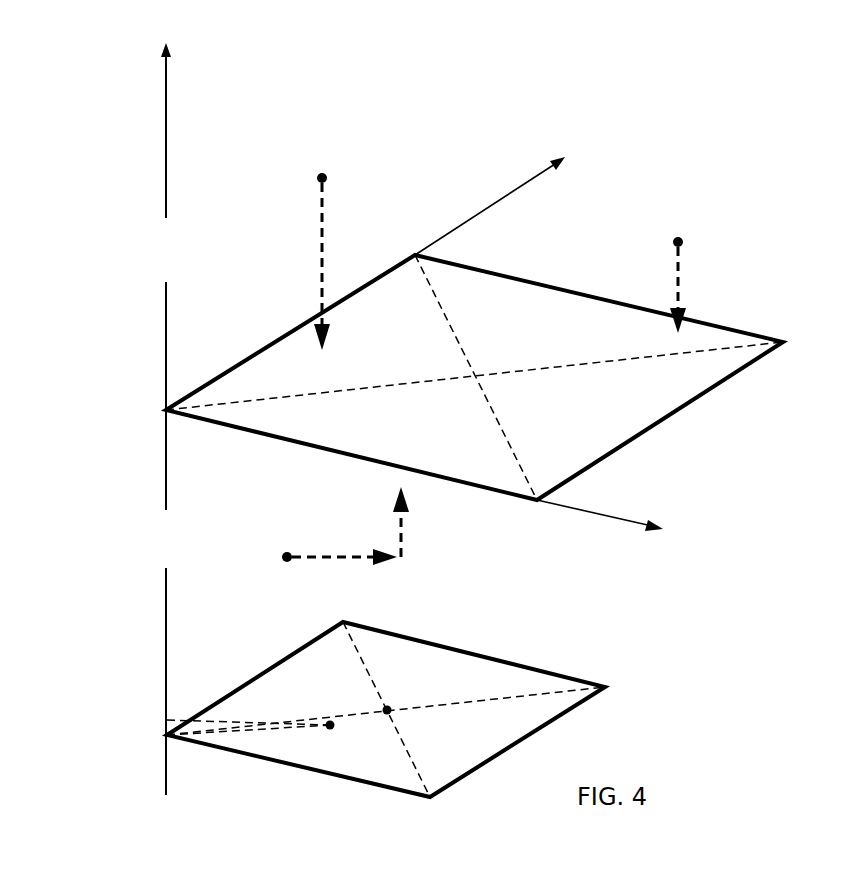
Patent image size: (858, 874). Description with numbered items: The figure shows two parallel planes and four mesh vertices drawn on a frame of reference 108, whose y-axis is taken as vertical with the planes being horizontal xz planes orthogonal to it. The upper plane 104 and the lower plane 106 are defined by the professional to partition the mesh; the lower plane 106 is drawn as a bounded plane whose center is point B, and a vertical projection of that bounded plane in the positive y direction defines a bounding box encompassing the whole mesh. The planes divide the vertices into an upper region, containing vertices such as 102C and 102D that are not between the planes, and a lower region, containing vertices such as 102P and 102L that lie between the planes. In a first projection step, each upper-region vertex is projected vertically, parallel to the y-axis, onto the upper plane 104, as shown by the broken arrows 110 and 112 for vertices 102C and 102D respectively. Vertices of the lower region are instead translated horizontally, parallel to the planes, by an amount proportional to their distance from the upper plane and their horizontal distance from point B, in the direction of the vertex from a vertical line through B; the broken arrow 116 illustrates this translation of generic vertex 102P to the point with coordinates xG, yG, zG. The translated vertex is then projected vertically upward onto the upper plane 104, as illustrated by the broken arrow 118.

The upper plane 104 is at (525, 313).
The lower plane 106 is at (530, 678).
The frame of reference 108 is at (167, 363).
The broken arrow 110 is at (322, 240).
The broken arrow 112 is at (682, 283).
The broken arrow 116 is at (310, 557).
The broken arrow 118 is at (407, 532).
The vertex 102C is at (394, 168).
The vertex 102D is at (753, 234).
The vertex 102P is at (271, 571).
The vertex 102L is at (348, 738).